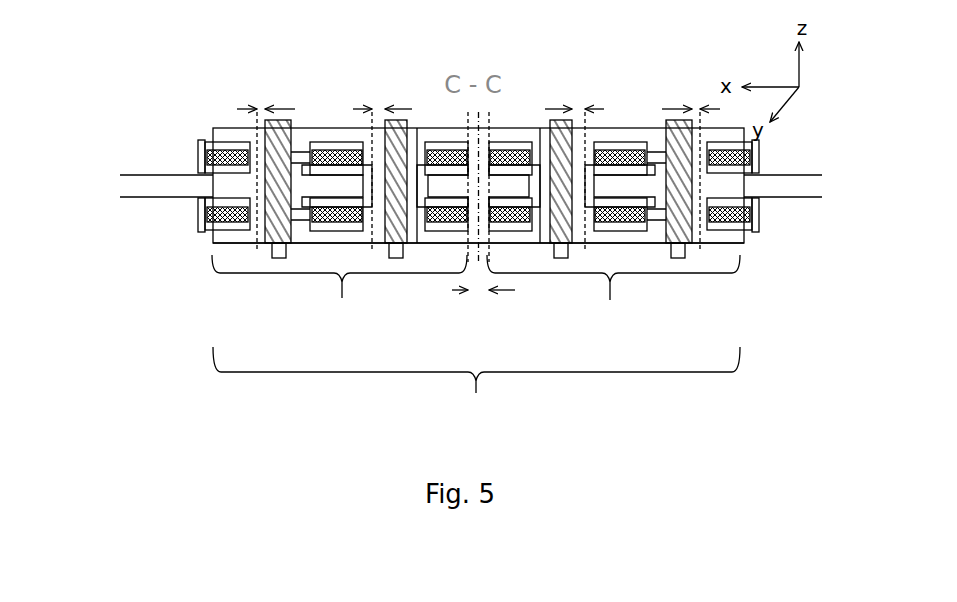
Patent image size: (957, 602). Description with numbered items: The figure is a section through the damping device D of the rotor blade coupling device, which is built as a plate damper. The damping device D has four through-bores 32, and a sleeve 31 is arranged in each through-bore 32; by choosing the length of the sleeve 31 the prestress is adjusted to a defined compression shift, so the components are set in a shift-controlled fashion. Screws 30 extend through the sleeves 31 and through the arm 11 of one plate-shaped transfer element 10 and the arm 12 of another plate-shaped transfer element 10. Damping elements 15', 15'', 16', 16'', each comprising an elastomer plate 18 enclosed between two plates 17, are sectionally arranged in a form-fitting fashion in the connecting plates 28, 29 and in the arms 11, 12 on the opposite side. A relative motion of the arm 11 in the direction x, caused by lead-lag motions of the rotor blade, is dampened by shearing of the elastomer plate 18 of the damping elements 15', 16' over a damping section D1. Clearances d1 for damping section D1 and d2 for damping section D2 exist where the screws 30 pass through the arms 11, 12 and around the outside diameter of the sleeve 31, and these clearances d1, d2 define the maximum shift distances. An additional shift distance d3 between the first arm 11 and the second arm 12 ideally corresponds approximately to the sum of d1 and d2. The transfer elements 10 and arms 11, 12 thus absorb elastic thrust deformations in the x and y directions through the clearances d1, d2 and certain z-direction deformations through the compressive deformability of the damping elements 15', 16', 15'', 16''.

The plate-shaped transfer element 10 is at (108, 148).
The arm 11 is at (795, 192).
The arm 12 is at (147, 178).
The damping element 15'' is at (197, 153).
The damping element 16'' is at (197, 213).
The damping element 15' is at (759, 156).
The damping element 16' is at (759, 215).
The plate 17 is at (229, 141).
The elastomer plate 18 is at (200, 216).
The connecting plate 28 is at (342, 135).
The connecting plate 29 is at (337, 243).
The screw 30 is at (678, 242).
The sleeve 31 is at (406, 220).
The through-bore 32 is at (262, 203).
The clearance d1 is at (632, 91).
The clearance d2 is at (324, 91).
The shift distance d3 is at (483, 309).
The damping device D is at (476, 390).
The damping section D1 is at (613, 297).
The damping section D2 is at (339, 297).